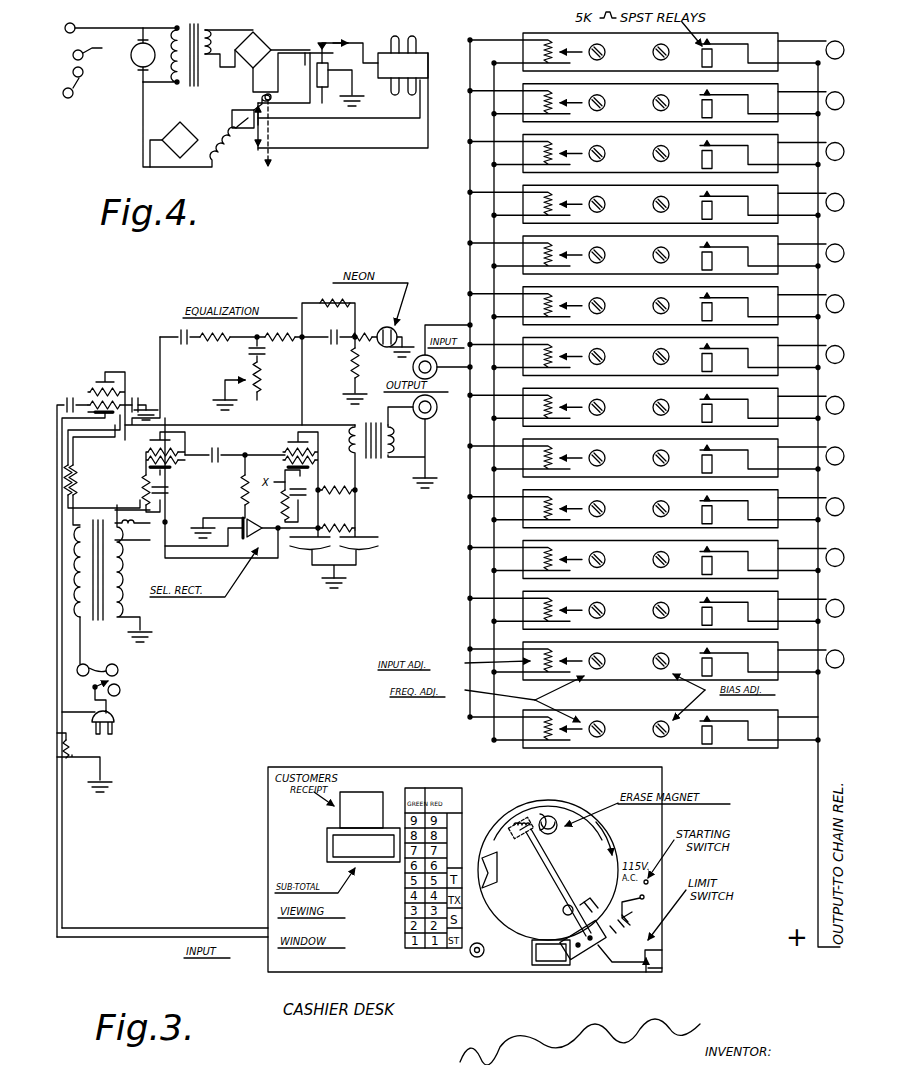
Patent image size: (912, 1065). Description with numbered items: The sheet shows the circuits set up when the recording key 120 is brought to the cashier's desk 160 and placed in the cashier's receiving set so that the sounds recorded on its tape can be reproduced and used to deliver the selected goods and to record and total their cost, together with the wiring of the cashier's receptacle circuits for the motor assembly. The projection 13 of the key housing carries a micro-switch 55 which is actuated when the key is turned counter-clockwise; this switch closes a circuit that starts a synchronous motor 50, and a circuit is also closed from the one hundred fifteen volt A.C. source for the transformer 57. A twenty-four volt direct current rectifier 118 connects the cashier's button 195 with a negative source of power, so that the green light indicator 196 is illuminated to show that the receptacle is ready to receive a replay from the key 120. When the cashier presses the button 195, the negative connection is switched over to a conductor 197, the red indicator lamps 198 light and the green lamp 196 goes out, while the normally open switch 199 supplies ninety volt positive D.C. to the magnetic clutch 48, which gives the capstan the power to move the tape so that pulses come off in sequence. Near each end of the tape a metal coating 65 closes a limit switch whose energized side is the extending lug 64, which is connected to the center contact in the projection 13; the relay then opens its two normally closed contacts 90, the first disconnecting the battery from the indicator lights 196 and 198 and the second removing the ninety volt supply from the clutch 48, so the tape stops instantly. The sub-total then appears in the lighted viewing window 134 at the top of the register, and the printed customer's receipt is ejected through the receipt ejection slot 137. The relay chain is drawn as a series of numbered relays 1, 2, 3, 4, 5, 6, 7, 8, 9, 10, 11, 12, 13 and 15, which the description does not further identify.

In FIG. 4, the micro-switch 55 is at (116, 71).
In FIG. 4, the synchronous motor 50 is at (133, 70).
In FIG. 4, the transformer 57 is at (192, 62).
In FIG. 3, the transformer 57 is at (116, 573).
In FIG. 4, the 24 volt direct current rectifier 118 is at (268, 40).
In FIG. 4, the normally closed contacts 90 is at (318, 74).
In FIG. 4, the magnetic clutch 48 is at (231, 154).
In FIG. 4, the conductor 197 is at (293, 150).
In FIG. 4, the normally open switch 199 is at (272, 127).
In FIG. 4, the red indicator lamps 198 is at (425, 43).
In FIG. 4, the green light indicator 196 is at (428, 95).
In FIG. 3, the relay 1 is at (656, 52).
In FIG. 3, the relay 2 is at (656, 103).
In FIG. 3, the relay 3 is at (656, 154).
In FIG. 3, the relay 4 is at (656, 204).
In FIG. 3, the relay 5 is at (656, 255).
In FIG. 3, the relay 6 is at (656, 306).
In FIG. 3, the relay 7 is at (656, 357).
In FIG. 3, the relay 8 is at (656, 407).
In FIG. 3, the relay 9 is at (656, 458).
In FIG. 3, the relay 10 is at (656, 509).
In FIG. 3, the relay 11 is at (656, 560).
In FIG. 3, the relay 12 is at (656, 610).
In FIG. 3, the projection of the key housing 13 is at (656, 661).
In FIG. 3, the relay 15 is at (654, 718).
In FIG. 3, the customer receipt ejection slot 137 is at (340, 822).
In FIG. 3, the viewing window 134 is at (372, 868).
In FIG. 3, the key 120 is at (548, 881).
In FIG. 3, the metal coating 65 is at (660, 953).
In FIG. 3, the extending lug 64 is at (652, 972).
In FIG. 3, the cashier's button 195 is at (474, 958).
In FIG. 3, the cashier's desk 160 is at (491, 953).